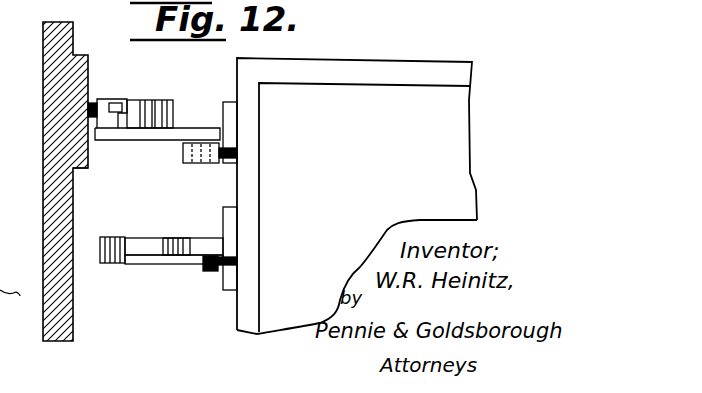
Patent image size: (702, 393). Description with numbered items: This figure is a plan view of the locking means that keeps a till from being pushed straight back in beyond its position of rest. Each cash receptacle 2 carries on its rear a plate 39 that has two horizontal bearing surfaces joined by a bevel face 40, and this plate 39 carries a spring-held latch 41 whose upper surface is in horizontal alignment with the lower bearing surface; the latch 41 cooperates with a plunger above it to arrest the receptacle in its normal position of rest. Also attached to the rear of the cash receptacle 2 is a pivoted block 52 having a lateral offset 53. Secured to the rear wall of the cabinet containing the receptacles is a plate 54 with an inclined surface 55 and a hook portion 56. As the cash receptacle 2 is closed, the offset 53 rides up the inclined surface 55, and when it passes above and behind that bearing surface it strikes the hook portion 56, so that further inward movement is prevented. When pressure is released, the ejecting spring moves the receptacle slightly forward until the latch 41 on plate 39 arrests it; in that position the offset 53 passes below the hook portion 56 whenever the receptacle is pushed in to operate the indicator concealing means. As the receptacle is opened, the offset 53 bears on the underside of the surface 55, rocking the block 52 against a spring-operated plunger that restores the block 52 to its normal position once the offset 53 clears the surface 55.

The cash receptacle 2 is at (350, 196).
The plate 39 is at (140, 246).
The bevel face 40 is at (184, 246).
The latch 41 is at (127, 260).
The pivoted block 52 is at (165, 138).
The lateral offset 53 is at (110, 104).
The plate 54 is at (84, 143).
The inclined surface 55 is at (163, 113).
The hook portion 56 is at (99, 102).